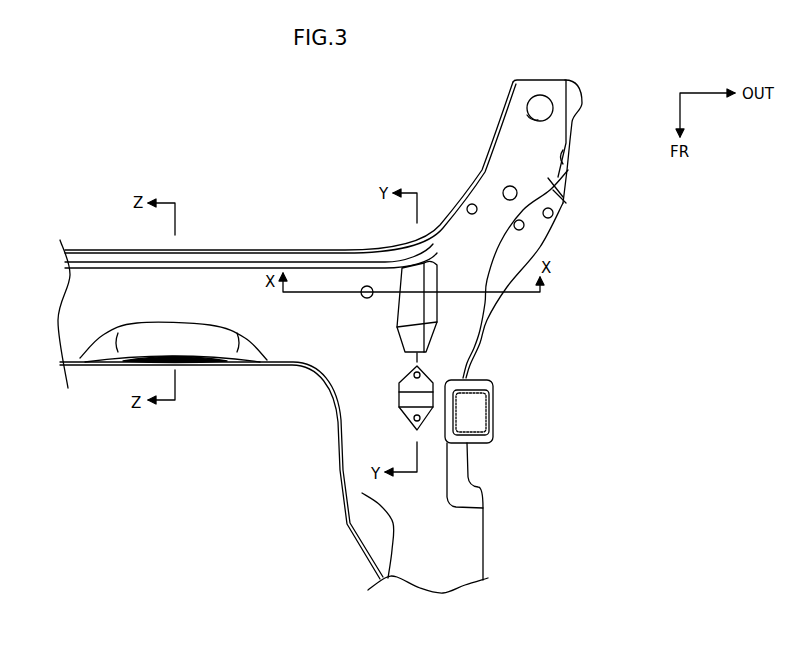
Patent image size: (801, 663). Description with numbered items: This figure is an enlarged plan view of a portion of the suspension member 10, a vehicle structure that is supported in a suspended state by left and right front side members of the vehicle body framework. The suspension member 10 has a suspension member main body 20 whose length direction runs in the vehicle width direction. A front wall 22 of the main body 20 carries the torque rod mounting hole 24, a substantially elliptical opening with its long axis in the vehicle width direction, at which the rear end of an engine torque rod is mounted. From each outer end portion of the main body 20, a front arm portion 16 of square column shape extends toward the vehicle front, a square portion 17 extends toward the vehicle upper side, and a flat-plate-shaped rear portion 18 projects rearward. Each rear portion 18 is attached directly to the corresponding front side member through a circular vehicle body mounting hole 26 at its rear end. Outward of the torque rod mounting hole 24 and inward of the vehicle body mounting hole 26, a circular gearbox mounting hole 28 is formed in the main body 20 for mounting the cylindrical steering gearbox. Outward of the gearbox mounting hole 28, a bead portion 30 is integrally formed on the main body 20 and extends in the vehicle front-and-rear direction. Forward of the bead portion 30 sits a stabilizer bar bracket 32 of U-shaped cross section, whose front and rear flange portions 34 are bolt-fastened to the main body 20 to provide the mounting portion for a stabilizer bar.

The suspension member 10 is at (317, 208).
The front arm portion 16 is at (473, 548).
The square portion 17 is at (492, 415).
The rear portion 18 is at (520, 90).
The suspension member main body 20 is at (480, 343).
The front wall 22 is at (242, 367).
The torque rod mounting hole 24 is at (200, 367).
The vehicle body mounting hole 26 is at (532, 118).
The gearbox mounting hole 28 is at (365, 286).
The bead portion 30 is at (413, 305).
The stabilizer bar bracket 32 is at (402, 392).
The flange portion 34 is at (423, 382).